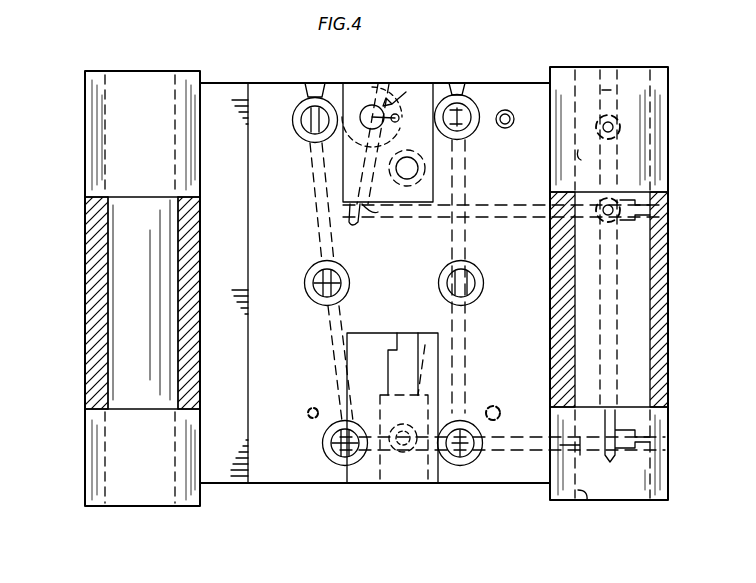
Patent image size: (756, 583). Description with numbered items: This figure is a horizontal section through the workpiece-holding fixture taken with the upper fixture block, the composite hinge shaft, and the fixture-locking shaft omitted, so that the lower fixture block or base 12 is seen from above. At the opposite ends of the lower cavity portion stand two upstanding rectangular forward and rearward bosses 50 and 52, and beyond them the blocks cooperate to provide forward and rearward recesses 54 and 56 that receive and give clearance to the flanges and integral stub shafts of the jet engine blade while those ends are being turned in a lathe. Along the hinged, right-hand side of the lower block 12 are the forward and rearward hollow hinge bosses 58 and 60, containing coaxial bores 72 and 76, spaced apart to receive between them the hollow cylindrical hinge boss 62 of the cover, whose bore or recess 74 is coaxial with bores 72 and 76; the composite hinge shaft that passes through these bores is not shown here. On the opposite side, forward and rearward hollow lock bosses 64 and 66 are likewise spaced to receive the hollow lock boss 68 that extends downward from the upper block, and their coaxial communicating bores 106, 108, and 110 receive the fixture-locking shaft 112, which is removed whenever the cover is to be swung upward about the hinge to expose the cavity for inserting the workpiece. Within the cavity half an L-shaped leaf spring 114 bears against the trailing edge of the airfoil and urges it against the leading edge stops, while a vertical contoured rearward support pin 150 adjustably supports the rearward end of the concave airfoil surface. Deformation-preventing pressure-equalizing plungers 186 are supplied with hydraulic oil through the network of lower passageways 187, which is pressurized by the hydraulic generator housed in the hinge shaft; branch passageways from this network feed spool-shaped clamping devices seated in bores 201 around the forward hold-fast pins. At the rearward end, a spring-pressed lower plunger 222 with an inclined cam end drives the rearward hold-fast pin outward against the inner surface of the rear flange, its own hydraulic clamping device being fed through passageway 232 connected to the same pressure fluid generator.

The lower fixture block 12 is at (76, 104).
The forward boss 50 is at (370, 485).
The rearward boss 52 is at (354, 86).
The forward recess 54 is at (226, 486).
The rearward recess 56 is at (208, 84).
The forward hinge boss 58 is at (665, 462).
The rearward hinge boss 60 is at (660, 165).
The hollow cylindrical hinge boss 62 is at (665, 308).
The forward lock boss 64 is at (87, 462).
The rearward lock boss 66 is at (85, 157).
The hollow lock boss 68 is at (95, 265).
The hinge bore 72 is at (584, 512).
The hinge bore 74 is at (580, 345).
The hinge bore 76 is at (576, 160).
The lock bore 106 is at (108, 440).
The lock bore 108 is at (105, 158).
The lock bore 110 is at (108, 290).
The fixture-locking shaft 112 is at (120, 370).
The L-shaped leaf spring 114 is at (681, 266).
The rearward support pin 150 is at (425, 225).
The pressure-equalizing plungers 186 is at (305, 138).
The lower passageways 187 is at (514, 455).
The bores 201 is at (392, 388).
The lower rearward plunger 222 is at (412, 90).
The passageway 232 is at (392, 225).